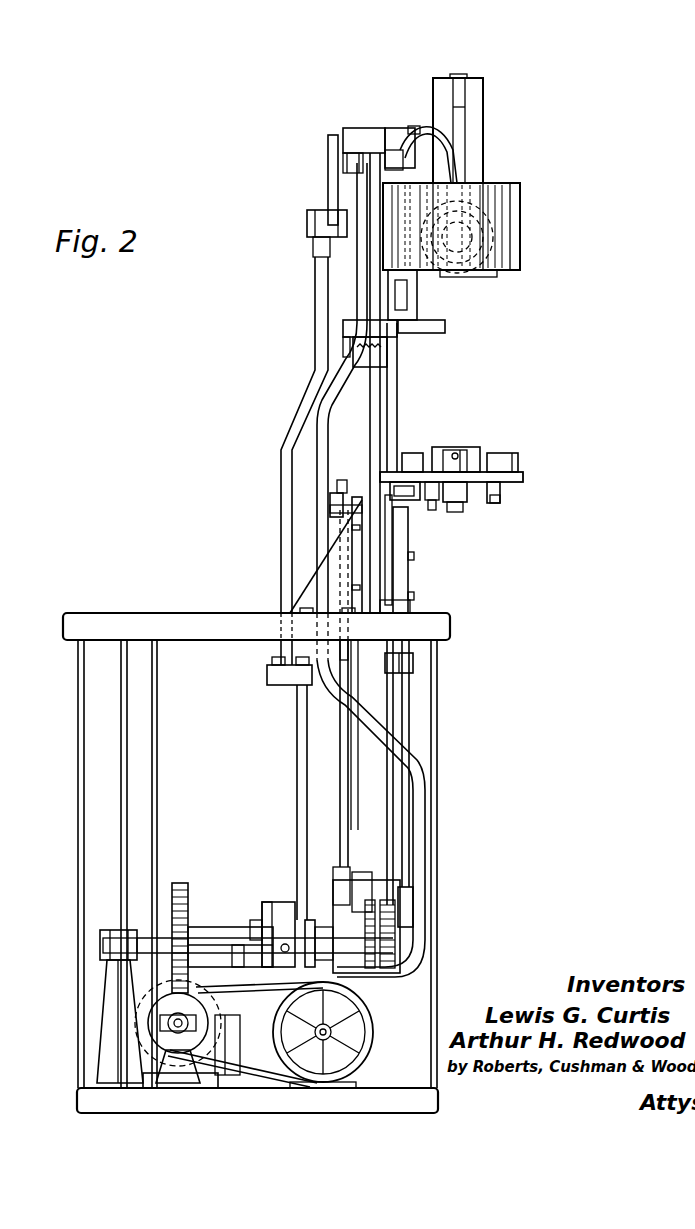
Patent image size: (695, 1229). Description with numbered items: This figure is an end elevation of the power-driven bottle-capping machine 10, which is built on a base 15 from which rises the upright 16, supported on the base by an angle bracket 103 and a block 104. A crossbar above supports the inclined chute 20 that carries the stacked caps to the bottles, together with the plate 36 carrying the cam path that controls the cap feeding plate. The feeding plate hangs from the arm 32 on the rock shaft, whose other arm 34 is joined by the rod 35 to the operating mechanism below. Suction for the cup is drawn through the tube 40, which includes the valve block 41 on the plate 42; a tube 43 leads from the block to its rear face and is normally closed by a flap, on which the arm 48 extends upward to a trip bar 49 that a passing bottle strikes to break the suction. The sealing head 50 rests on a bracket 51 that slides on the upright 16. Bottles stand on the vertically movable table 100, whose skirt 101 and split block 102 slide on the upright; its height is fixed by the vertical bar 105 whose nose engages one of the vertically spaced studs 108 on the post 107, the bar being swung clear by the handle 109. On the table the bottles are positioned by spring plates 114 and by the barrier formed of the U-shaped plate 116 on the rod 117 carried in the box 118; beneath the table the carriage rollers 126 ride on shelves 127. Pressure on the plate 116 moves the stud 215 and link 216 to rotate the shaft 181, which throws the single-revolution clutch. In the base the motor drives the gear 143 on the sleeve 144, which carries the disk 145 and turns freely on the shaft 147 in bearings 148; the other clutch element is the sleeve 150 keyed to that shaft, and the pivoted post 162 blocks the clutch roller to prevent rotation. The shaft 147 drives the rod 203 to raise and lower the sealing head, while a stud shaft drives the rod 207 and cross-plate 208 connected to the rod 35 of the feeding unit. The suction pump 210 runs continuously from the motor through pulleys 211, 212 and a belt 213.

The machine 10 is at (175, 598).
The base 15 is at (427, 770).
The upright 16 is at (380, 128).
The chute 20 is at (484, 150).
The arm 32 is at (350, 145).
The arm 34 is at (328, 176).
The rod or actuator 35 is at (315, 288).
The plate 36 is at (413, 126).
The tube 40 is at (415, 150).
The valve block 41 is at (358, 360).
The plate 42 is at (395, 309).
The tube 43 is at (398, 400).
The arm 48 is at (355, 340).
The trip bar 49 is at (435, 322).
The head 50 is at (521, 218).
The bracket 51 is at (493, 276).
The table 100 is at (524, 476).
The skirt 101 is at (410, 608).
The split block 102 is at (373, 563).
The angle bracket 103 is at (310, 585).
The block 104 is at (340, 490).
The vertical bar 105 is at (408, 565).
The post 107 is at (408, 578).
The stud 108 is at (414, 596).
The handle 109 is at (415, 513).
The spring plate 114 is at (413, 455).
The U-shaped plate 116 is at (470, 452).
The rod 117 is at (456, 453).
The box 118 is at (465, 450).
The roller 126 is at (501, 490).
The shelf 127 is at (500, 500).
The gear 143 is at (180, 883).
The sleeve 144 is at (205, 925).
The disk 145 is at (268, 902).
The shaft 147 is at (105, 928).
The bearing 148 is at (100, 938).
The sleeve 150 is at (303, 920).
The post 162 is at (262, 1078).
The shaft 181 is at (339, 750).
The rod 203 is at (410, 720).
The rod 207 is at (296, 777).
The cross-plate 208 is at (283, 686).
The pump 210 is at (362, 1010).
The pulley 211 is at (152, 1020).
The pulley 212 is at (355, 1015).
The belt 213 is at (262, 1062).
The stud 215 is at (462, 495).
The link 216 is at (440, 510).